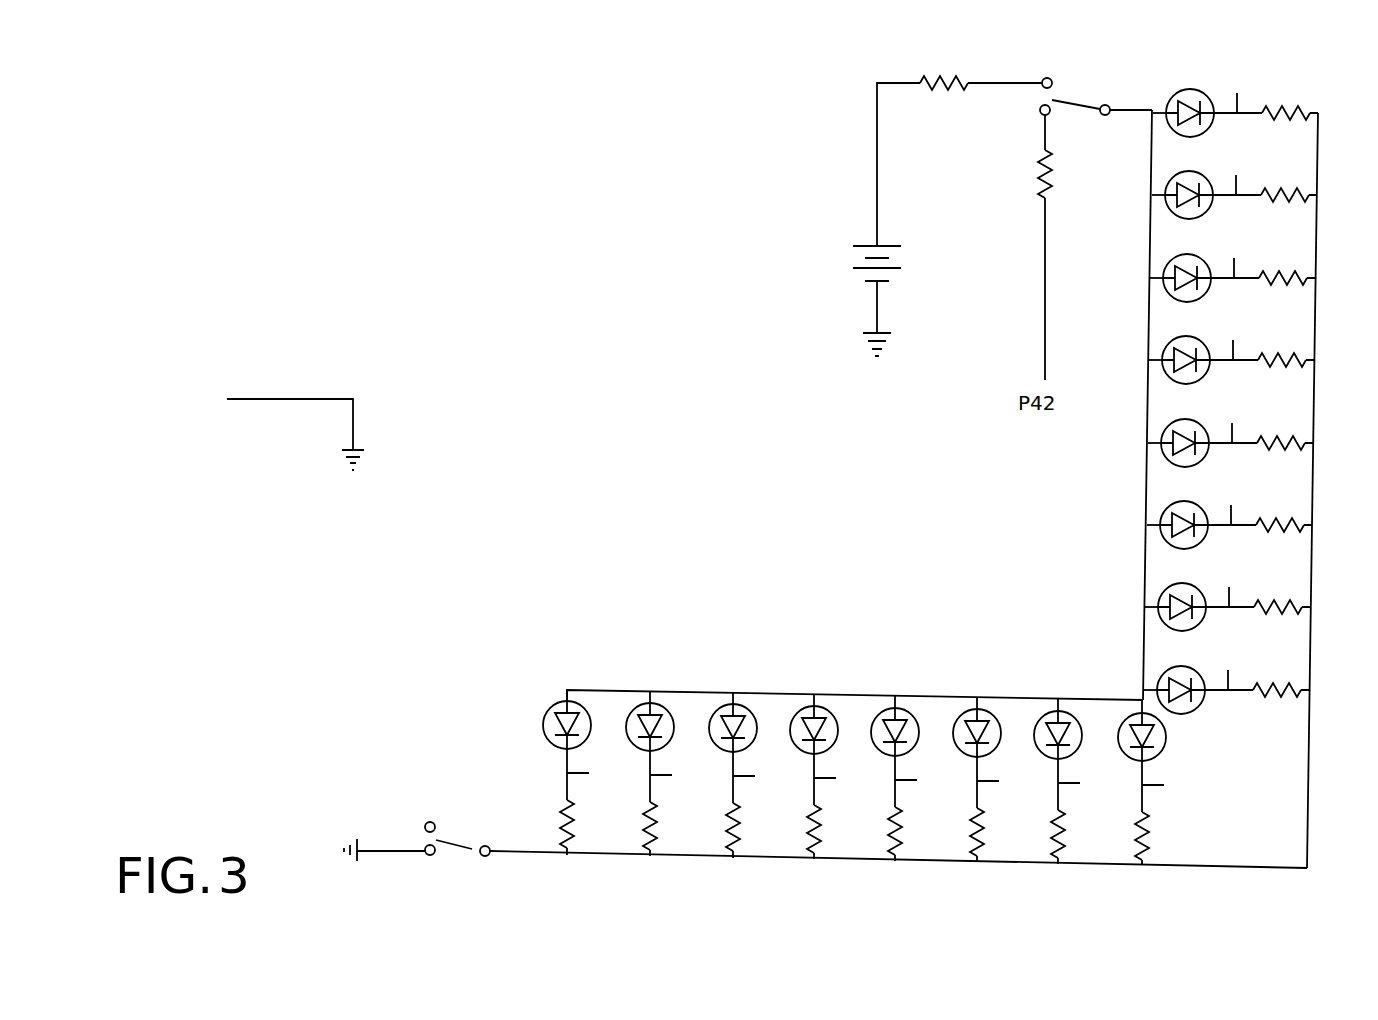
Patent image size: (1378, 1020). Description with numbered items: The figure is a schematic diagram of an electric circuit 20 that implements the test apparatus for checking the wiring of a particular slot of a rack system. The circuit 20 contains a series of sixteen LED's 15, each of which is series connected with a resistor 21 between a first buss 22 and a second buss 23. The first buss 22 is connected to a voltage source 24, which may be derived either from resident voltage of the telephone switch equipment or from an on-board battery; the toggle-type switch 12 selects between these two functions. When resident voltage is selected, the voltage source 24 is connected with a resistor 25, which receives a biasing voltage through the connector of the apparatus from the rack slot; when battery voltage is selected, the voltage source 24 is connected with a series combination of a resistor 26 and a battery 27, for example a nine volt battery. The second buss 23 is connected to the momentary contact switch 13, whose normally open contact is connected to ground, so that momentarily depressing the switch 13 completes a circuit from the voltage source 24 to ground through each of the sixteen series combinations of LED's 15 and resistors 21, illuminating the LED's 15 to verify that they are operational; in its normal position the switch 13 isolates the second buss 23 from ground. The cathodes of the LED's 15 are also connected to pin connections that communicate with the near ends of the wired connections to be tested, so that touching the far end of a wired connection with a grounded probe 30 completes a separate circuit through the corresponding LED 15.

The switch 12 is at (1068, 103).
The switch 13 is at (479, 842).
The LED's 15 is at (530, 694).
The electric circuit 20 is at (1020, 595).
The resistor 21 is at (1302, 198).
The first buss 22 is at (582, 692).
The second buss 23 is at (1247, 841).
The voltage source 24 is at (1121, 107).
The resistor 25 is at (1044, 203).
The resistor 26 is at (960, 92).
The battery 27 is at (901, 268).
The probe 30 is at (272, 399).